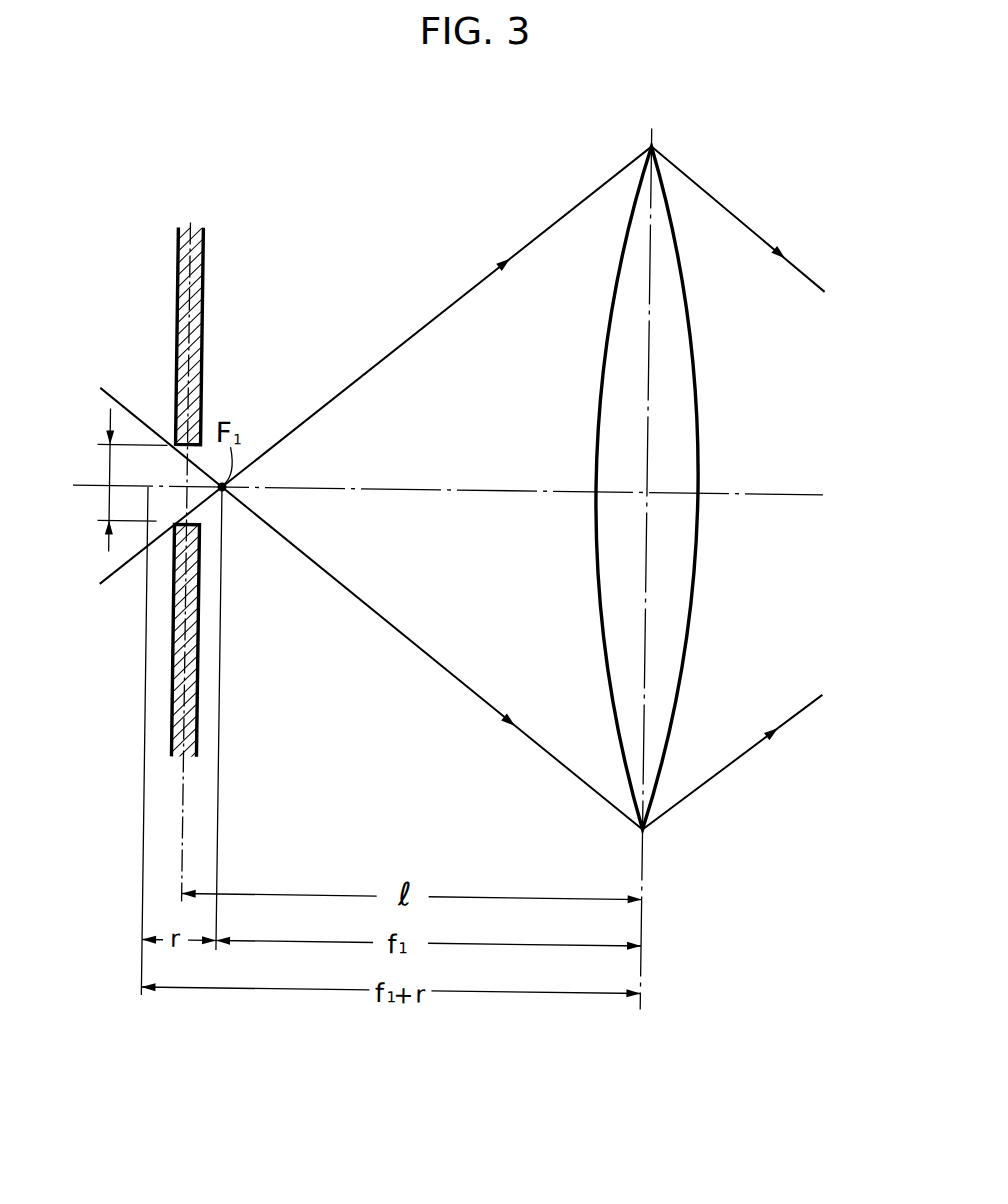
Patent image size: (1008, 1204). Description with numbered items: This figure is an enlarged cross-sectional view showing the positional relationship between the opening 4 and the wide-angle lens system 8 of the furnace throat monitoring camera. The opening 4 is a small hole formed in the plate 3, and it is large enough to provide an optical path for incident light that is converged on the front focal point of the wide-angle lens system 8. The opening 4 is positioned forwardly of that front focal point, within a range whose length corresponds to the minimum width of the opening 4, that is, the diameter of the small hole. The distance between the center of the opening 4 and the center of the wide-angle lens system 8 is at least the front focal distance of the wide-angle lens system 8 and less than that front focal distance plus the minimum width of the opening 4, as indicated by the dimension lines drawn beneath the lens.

The aperture plate 3 is at (203, 285).
The opening 4 is at (178, 473).
The wide-angle lens system 8 is at (668, 209).